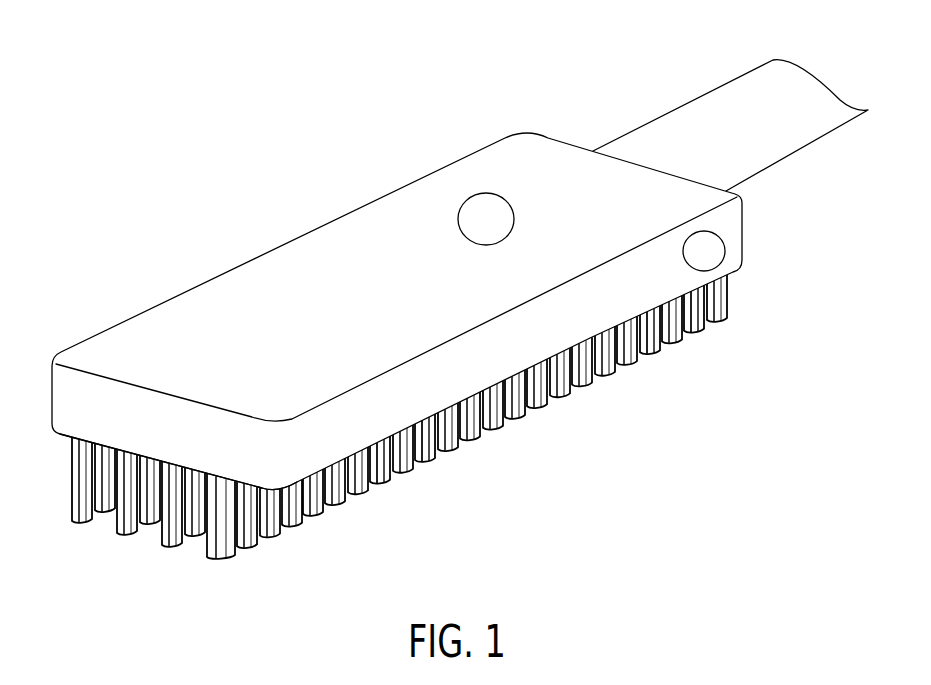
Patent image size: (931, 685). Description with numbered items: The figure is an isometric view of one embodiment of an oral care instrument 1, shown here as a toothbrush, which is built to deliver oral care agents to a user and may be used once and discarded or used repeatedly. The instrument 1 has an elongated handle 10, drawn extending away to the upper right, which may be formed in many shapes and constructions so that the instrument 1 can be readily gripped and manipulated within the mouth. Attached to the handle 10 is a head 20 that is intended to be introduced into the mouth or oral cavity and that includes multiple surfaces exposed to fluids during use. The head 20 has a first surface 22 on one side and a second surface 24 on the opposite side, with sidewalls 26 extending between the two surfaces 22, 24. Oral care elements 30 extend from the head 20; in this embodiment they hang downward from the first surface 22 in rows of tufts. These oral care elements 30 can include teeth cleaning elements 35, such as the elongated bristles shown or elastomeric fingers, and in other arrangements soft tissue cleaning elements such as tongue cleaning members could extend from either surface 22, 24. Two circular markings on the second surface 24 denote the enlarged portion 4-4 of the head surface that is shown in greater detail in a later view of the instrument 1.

The oral care instrument 1 is at (223, 75).
The elongated handle 10 is at (785, 72).
The head 20 is at (406, 313).
The first surface 22 is at (60, 437).
The second surface 24 is at (191, 342).
The sidewalls 26 is at (145, 442).
The oral care elements 30 is at (223, 579).
The teeth cleaning elements 35 is at (380, 479).
The enlarged portion 4-4 is at (499, 200).